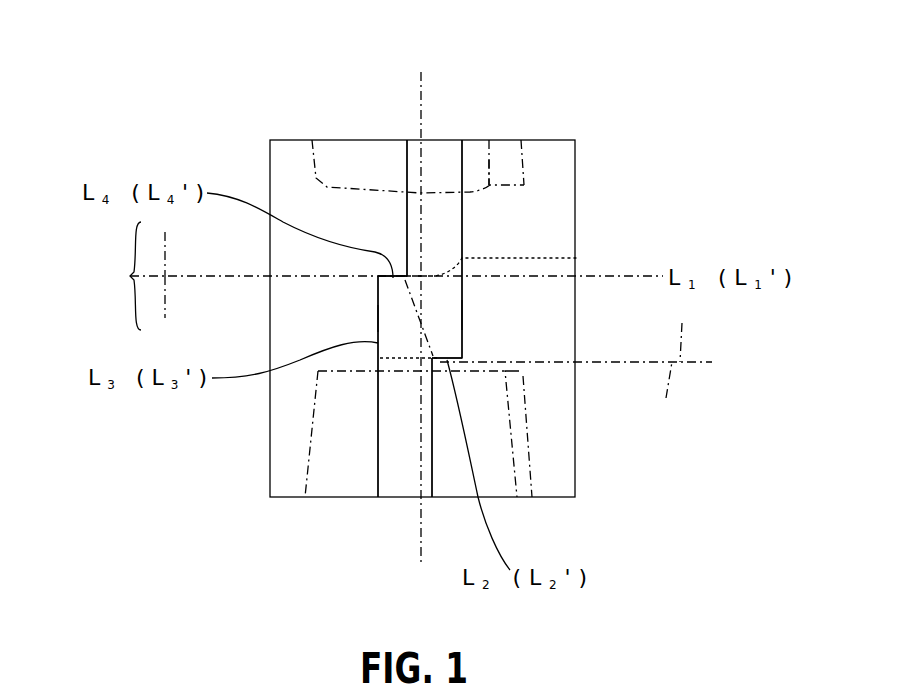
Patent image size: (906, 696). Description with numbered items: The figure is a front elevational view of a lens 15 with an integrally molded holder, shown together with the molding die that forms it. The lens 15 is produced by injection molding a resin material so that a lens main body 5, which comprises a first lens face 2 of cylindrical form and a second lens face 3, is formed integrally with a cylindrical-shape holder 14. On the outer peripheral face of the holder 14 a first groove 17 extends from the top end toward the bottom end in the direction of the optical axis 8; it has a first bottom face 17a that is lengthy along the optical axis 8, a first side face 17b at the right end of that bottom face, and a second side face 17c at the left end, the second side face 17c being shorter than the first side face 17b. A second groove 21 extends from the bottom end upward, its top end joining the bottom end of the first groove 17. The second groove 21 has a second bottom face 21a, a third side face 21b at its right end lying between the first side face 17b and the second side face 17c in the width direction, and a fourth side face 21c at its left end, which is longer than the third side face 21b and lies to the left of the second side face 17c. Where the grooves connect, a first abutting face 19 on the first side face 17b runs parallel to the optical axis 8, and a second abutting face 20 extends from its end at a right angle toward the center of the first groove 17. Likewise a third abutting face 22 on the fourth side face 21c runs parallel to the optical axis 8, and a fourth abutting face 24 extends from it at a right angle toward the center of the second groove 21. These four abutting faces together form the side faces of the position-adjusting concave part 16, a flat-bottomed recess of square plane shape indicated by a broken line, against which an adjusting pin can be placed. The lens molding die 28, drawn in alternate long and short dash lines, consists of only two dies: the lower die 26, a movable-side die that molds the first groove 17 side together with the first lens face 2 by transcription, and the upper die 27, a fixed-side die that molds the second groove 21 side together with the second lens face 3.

The first lens face 2 is at (422, 45).
The second lens face 3 is at (517, 497).
The lens main body 5 is at (523, 140).
The optical axis 8 is at (418, 128).
The holder 14 is at (342, 140).
The lens 15 is at (254, 134).
The position-adjusting concave part 16 is at (577, 258).
The first groove 17 is at (440, 140).
The first bottom face 17a is at (460, 140).
The first side face 17b is at (462, 228).
The second side face 17c is at (407, 228).
The first abutting face 19 is at (462, 321).
The second abutting face 20 is at (450, 358).
The second groove 21 is at (399, 480).
The second bottom face 21a is at (390, 465).
The third side face 21b is at (434, 464).
The fourth side face 21c is at (378, 432).
The third abutting face 22 is at (378, 311).
The fourth abutting face 24 is at (378, 293).
The lower die 26 is at (418, 348).
The upper die 27 is at (425, 285).
The lens molding die 28 is at (112, 290).